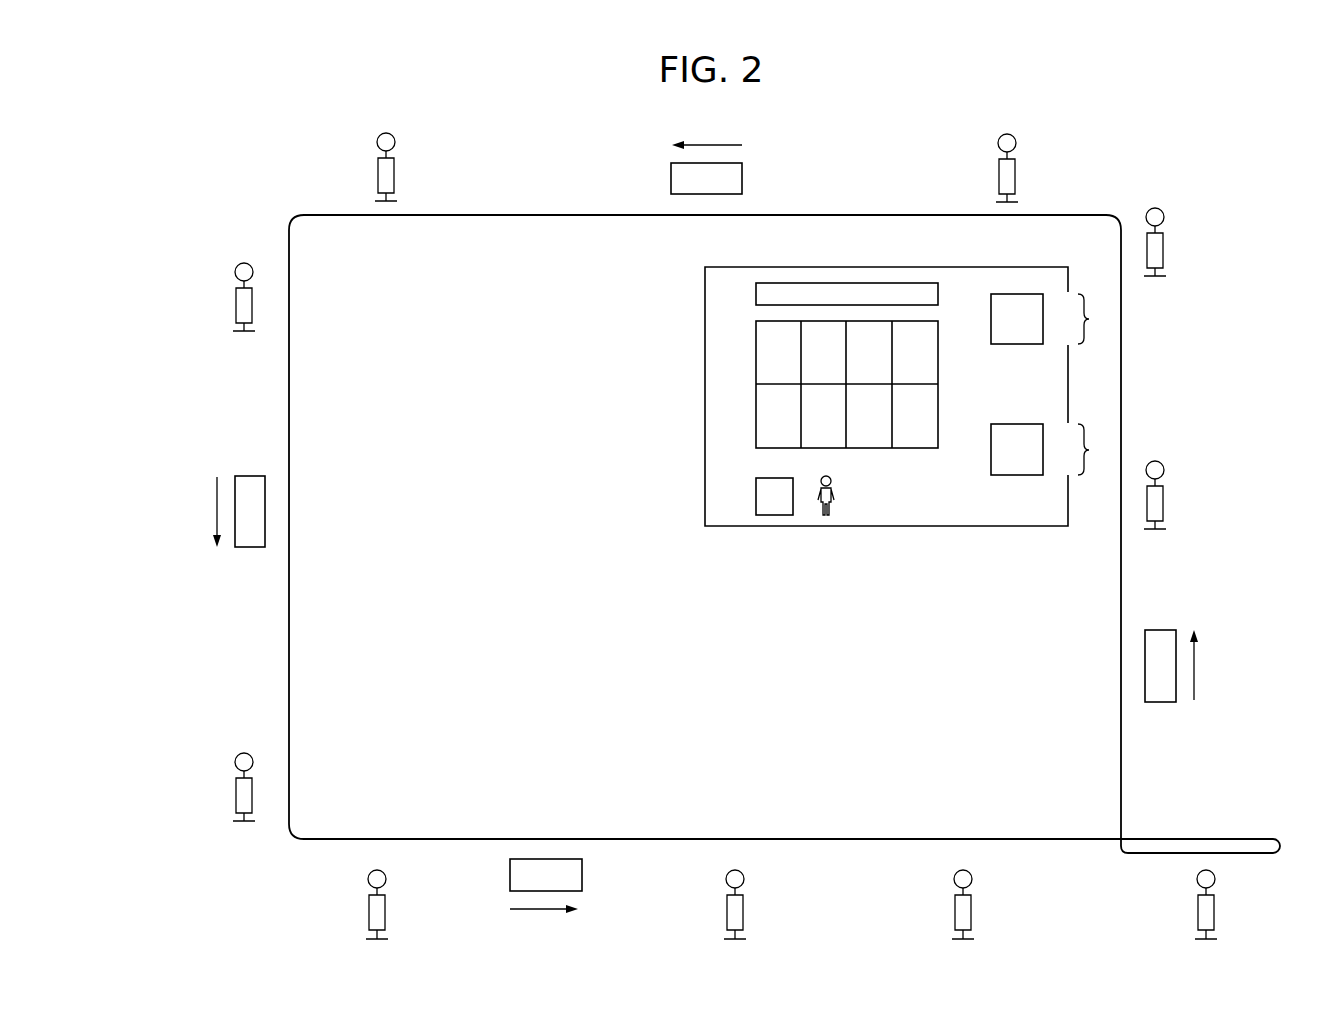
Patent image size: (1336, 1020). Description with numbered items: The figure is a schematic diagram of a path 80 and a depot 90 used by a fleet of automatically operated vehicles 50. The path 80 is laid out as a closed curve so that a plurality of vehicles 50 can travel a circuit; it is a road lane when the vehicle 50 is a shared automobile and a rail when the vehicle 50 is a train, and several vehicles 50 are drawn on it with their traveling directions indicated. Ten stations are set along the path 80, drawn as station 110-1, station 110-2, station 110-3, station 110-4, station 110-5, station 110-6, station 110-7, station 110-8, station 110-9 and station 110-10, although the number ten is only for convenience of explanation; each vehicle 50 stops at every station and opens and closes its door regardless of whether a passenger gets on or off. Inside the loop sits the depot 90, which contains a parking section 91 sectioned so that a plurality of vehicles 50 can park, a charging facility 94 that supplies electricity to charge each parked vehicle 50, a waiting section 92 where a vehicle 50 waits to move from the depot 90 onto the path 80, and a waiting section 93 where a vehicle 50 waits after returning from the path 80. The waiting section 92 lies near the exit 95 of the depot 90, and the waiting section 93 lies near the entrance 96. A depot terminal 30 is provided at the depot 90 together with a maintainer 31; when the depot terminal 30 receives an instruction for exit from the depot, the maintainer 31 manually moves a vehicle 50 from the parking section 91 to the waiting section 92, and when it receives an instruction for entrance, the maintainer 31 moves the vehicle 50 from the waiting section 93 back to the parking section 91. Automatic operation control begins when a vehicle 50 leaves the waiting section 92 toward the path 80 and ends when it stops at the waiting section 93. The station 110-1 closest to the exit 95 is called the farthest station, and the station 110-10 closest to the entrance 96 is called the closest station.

The depot terminal 30 is at (755, 497).
The maintainer 31 is at (837, 491).
The vehicle 50 is at (743, 178).
The path 80 is at (1122, 576).
The depot 90 is at (932, 528).
The parking section 91 is at (753, 372).
The waiting section 92 is at (1015, 345).
The waiting section 93 is at (1015, 476).
The charging facility 94 is at (755, 292).
The exit 95 is at (1097, 319).
The entrance 96 is at (1097, 449).
The station 110-1 is at (1164, 253).
The station 110-2 is at (1017, 170).
The station 110-3 is at (394, 175).
The station 110-4 is at (236, 305).
The station 110-5 is at (236, 795).
The station 110-6 is at (386, 912).
The station 110-7 is at (744, 912).
The station 110-8 is at (972, 912).
The station 110-9 is at (1215, 912).
The station 110-10 is at (1164, 505).